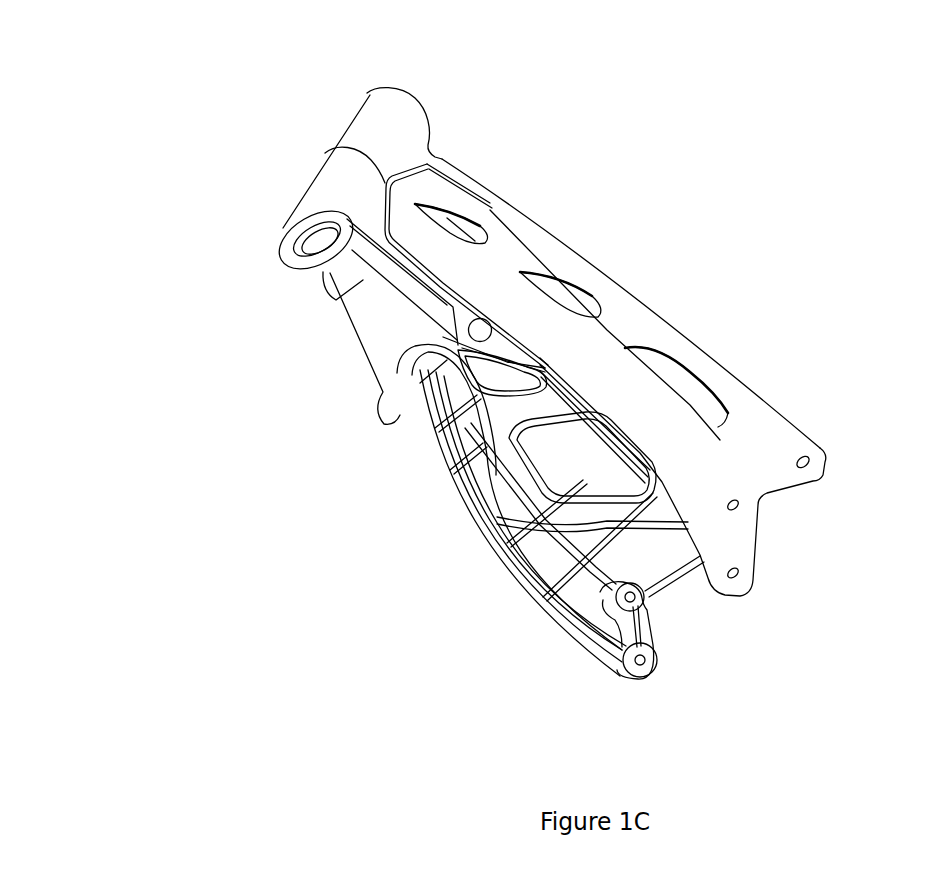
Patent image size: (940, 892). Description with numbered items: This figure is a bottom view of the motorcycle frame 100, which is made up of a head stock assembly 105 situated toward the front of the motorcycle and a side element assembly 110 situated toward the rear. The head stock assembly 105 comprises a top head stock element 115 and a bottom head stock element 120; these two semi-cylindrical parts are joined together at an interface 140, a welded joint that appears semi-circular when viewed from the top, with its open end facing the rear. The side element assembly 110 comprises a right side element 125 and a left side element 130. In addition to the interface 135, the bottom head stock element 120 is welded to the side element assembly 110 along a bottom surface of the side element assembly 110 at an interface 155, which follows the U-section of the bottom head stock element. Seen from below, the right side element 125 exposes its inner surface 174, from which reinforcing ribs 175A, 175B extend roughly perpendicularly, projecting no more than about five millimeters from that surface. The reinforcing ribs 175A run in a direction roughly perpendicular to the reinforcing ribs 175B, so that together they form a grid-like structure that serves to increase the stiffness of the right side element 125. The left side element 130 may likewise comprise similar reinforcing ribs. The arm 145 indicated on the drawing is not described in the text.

The motorcycle frame 100 is at (147, 725).
The head stock assembly 105 is at (373, 120).
The side element assembly 110 is at (777, 380).
The top head stock element 115 is at (400, 116).
The bottom head stock element 120 is at (316, 193).
The right side element 125 is at (500, 560).
The left side element 130 is at (780, 467).
The interface 135 is at (387, 218).
The interface 140 is at (347, 145).
The rib 145 is at (427, 168).
The interface 155 is at (427, 427).
The inner surface 174 is at (528, 550).
The reinforcing ribs 175A is at (553, 555).
The reinforcing ribs 175B is at (487, 443).